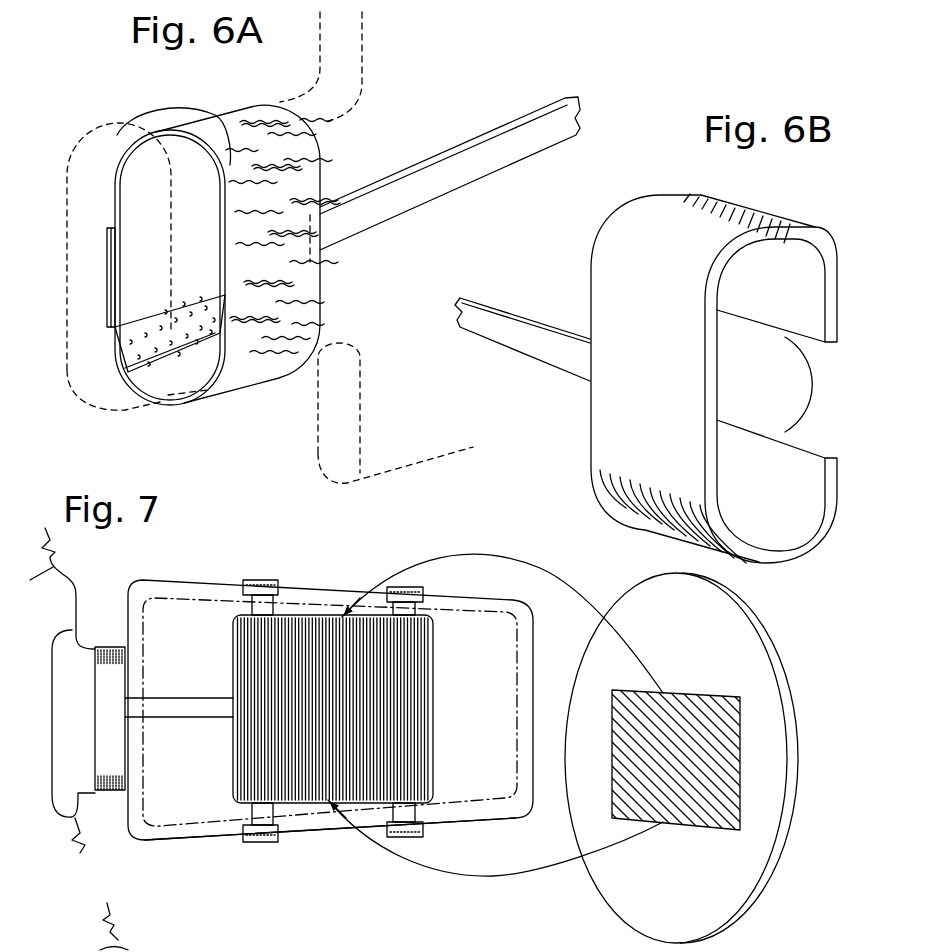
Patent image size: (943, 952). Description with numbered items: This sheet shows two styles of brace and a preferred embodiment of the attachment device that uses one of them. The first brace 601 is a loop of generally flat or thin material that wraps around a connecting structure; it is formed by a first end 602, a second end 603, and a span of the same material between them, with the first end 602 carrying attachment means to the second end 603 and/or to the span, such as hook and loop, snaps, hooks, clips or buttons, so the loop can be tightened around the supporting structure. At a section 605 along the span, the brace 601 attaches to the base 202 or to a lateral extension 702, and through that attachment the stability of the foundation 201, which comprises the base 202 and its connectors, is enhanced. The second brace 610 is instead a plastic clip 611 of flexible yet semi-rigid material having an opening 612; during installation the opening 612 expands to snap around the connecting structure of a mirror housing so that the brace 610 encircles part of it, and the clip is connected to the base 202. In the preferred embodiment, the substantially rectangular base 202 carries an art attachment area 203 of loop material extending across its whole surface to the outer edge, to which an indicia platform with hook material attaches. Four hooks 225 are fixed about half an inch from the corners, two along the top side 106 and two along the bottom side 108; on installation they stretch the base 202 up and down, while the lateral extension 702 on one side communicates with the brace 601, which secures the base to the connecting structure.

In FIG. 6A, the brace 601 is at (214, 418).
In FIG. 7, the brace 601 is at (110, 665).
In FIG. 6A, the first end 602 is at (100, 293).
In FIG. 6A, the second end 603 is at (123, 277).
In FIG. 6A, the section 605 is at (200, 109).
In FIG. 6B, the brace 610 is at (804, 568).
In FIG. 6B, the plastic clip 611 is at (591, 275).
In FIG. 6B, the opening 612 is at (812, 388).
In FIG. 7, the top side 106 is at (182, 585).
In FIG. 7, the bottom side 108 is at (220, 842).
In FIG. 7, the foundation 201 is at (436, 798).
In FIG. 7, the base 202 is at (249, 951).
In FIG. 7, the art attachment area 203 is at (433, 713).
In FIG. 7, the hooks 225 is at (278, 588).
In FIG. 7, the lateral extension 702 is at (187, 707).